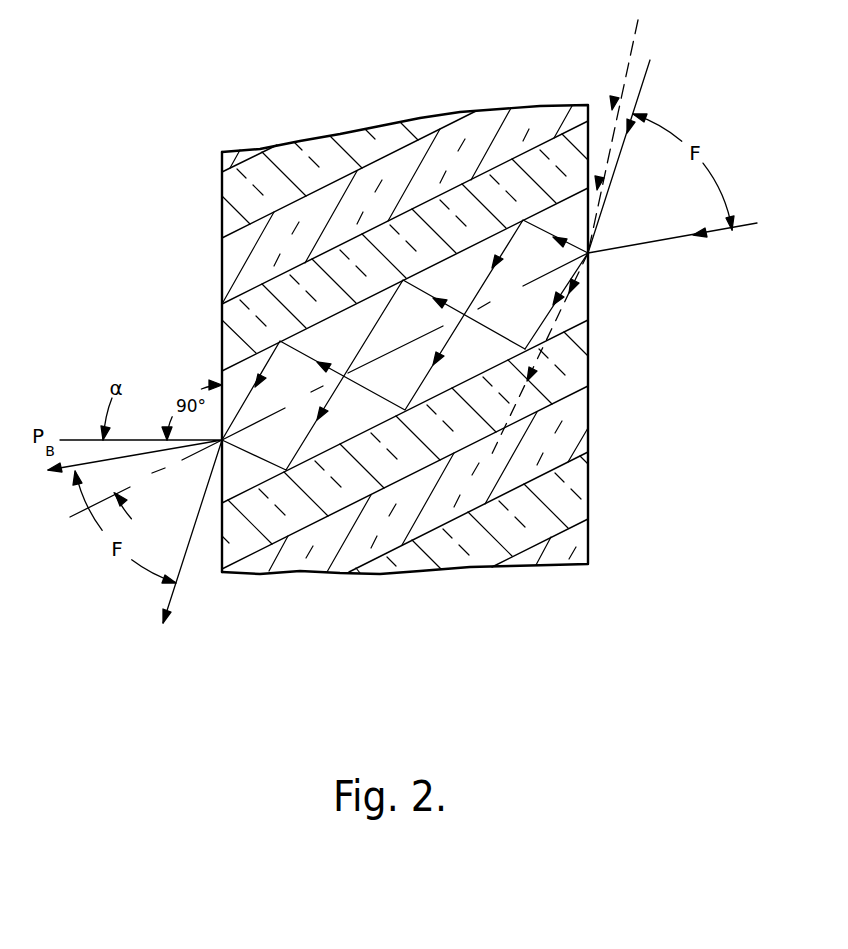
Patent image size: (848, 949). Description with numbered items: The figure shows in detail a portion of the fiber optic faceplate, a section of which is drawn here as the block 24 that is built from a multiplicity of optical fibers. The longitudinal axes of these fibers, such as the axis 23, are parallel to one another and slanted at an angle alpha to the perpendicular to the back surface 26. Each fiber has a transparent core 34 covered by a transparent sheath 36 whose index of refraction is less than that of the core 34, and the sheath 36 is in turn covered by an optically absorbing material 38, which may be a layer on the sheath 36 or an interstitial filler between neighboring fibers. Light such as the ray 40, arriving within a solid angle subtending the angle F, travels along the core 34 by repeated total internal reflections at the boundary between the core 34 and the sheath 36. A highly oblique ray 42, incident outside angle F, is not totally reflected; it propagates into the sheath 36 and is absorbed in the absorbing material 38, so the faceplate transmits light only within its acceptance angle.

The axis 23 is at (76, 516).
The laminated light-guiding body 24 is at (588, 502).
The back surface 26 is at (222, 237).
The transparent core 34 is at (585, 307).
The transparent sheath 36 is at (304, 140).
The optically absorbing material 38 is at (222, 281).
The ray 40 is at (651, 68).
The ray 42 is at (626, 44).